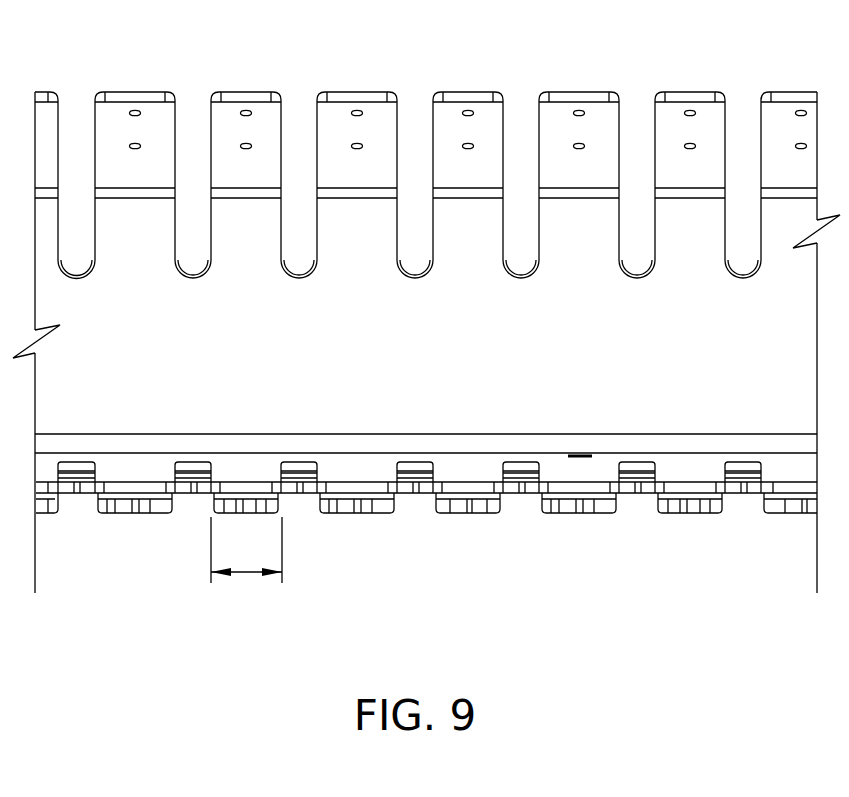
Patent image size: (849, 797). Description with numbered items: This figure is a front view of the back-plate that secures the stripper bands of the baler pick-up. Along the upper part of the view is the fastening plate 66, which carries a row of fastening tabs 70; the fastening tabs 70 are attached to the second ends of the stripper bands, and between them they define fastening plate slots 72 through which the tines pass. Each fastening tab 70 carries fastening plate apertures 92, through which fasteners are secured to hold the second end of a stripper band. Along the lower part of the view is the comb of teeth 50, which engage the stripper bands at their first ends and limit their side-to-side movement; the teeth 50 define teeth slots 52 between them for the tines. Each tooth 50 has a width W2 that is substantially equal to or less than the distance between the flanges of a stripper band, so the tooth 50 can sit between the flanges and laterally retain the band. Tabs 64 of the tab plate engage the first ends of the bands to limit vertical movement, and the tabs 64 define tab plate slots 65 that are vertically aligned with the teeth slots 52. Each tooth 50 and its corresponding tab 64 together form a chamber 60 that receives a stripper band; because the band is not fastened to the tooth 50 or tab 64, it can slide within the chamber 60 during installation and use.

The tooth 50 is at (426, 537).
The teeth slot 52 is at (426, 548).
The chamber 60 is at (587, 503).
The tab 64 is at (118, 481).
The tab plate slot 65 is at (422, 464).
The fastening plate 66 is at (495, 322).
The fastening tab 70 is at (398, 130).
The fastening plate slot 72 is at (307, 144).
The fastening plate aperture 92 is at (131, 146).
The width of tooth W2 is at (246, 572).